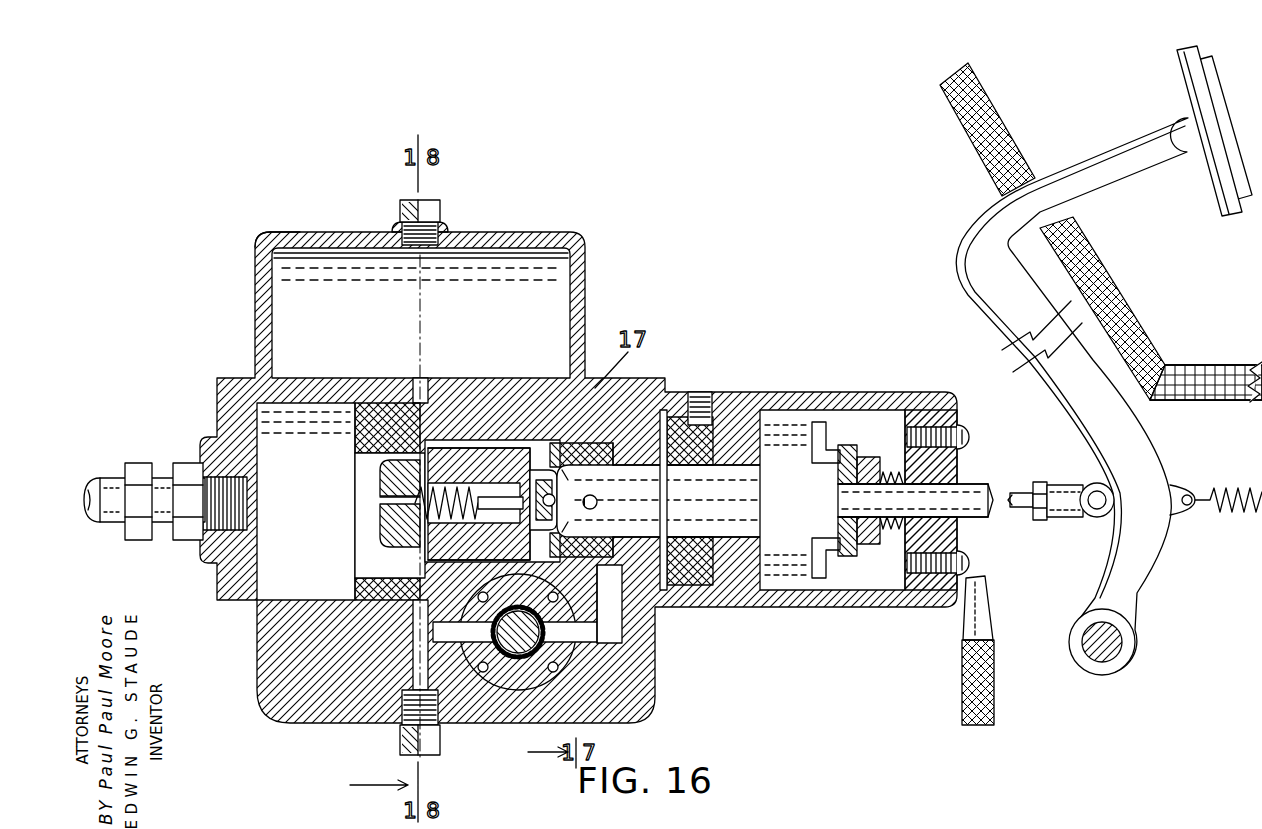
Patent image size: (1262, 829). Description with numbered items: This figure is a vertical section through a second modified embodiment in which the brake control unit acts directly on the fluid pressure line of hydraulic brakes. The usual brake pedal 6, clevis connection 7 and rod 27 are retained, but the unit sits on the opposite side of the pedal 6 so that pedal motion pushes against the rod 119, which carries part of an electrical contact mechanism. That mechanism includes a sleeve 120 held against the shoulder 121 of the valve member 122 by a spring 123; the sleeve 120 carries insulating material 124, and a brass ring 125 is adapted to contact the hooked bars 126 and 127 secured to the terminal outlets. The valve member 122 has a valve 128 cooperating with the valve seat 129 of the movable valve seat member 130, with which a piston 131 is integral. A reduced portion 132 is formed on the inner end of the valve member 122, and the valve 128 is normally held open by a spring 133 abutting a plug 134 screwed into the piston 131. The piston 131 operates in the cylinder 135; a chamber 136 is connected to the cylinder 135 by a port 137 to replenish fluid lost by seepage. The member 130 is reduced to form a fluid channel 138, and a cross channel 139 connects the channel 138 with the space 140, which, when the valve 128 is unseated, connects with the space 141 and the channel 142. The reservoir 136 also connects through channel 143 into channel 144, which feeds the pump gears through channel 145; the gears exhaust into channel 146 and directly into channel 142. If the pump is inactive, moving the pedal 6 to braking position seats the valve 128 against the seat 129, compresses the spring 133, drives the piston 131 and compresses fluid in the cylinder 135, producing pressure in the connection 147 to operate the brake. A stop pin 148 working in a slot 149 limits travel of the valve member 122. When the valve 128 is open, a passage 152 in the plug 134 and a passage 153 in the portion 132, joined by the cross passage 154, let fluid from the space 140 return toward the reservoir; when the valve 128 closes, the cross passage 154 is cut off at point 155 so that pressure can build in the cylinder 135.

The brake pedal 6 is at (1158, 148).
The brake rod clevis connection 7 is at (1093, 516).
The rod 27 is at (1036, 482).
The rod 119 is at (982, 490).
The sleeve 120 is at (885, 472).
The shoulder 121 is at (835, 497).
The valve member 122 is at (772, 488).
The spring 123 is at (900, 480).
The insulating material 124 is at (862, 460).
The brass ring 125 is at (853, 450).
The hooked bar 126 is at (828, 430).
The hooked bar 127 is at (822, 562).
The valve 128 is at (608, 395).
The valve seat 129 is at (552, 392).
The movable valve seat member 130 is at (640, 395).
The piston 131 is at (385, 395).
The reduced portion 132 is at (532, 392).
The spring 133 is at (460, 392).
The plug 134 is at (378, 478).
The cylinder 135 is at (275, 432).
The chamber 136 is at (522, 282).
The port 137 is at (350, 400).
The fluid channel 138 is at (478, 392).
The cross channel 139 is at (585, 540).
The space 140 is at (395, 548).
The space 141 is at (606, 548).
The channel 142 is at (612, 625).
The channel 143 is at (428, 388).
The channel 144 is at (422, 668).
The channel 145 is at (440, 638).
The channel 146 is at (583, 640).
The connection 147 is at (117, 478).
The stop pin 148 is at (662, 395).
The slot 149 is at (597, 500).
The passage 152 is at (385, 498).
The passage 153 is at (380, 518).
The cross passage 154 is at (507, 392).
The cut off point 155 is at (397, 538).